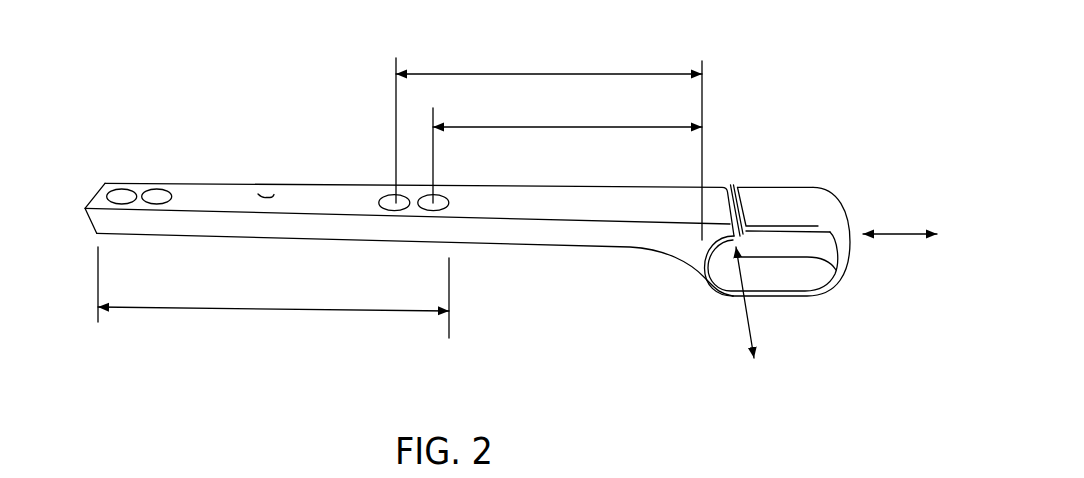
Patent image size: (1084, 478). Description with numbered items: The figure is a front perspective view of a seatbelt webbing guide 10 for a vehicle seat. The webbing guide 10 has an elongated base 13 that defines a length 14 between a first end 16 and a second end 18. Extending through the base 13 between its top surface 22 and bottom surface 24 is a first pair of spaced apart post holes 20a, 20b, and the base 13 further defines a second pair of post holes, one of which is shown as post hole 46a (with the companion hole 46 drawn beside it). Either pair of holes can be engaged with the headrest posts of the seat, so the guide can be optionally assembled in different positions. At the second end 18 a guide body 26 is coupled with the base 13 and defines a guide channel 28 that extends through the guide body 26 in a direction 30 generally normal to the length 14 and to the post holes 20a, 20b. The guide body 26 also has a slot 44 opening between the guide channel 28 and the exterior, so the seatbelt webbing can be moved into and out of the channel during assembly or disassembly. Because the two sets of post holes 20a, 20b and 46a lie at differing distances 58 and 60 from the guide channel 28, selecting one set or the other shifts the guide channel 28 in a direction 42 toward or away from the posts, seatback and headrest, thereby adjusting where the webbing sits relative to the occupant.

The webbing guide 10 is at (802, 96).
The base 13 is at (221, 248).
The length 14 is at (320, 310).
The first end 16 is at (90, 203).
The second end 18 is at (502, 198).
The first post hole 20a is at (157, 190).
The second post hole 20b is at (441, 200).
The top surface 22 is at (268, 195).
The bottom surface 24 is at (348, 243).
The guide body 26 is at (819, 183).
The guide channel 28 is at (797, 278).
The direction 30 is at (745, 315).
The direction 42 is at (889, 238).
The slot 44 is at (731, 188).
The hole 46 is at (387, 195).
The second post hole 46a is at (120, 189).
The distance 58 is at (557, 124).
The distance 60 is at (518, 73).